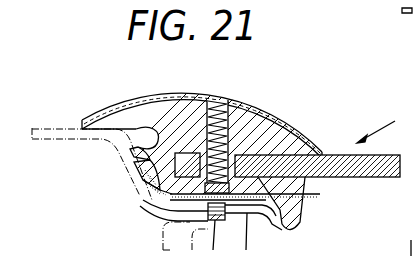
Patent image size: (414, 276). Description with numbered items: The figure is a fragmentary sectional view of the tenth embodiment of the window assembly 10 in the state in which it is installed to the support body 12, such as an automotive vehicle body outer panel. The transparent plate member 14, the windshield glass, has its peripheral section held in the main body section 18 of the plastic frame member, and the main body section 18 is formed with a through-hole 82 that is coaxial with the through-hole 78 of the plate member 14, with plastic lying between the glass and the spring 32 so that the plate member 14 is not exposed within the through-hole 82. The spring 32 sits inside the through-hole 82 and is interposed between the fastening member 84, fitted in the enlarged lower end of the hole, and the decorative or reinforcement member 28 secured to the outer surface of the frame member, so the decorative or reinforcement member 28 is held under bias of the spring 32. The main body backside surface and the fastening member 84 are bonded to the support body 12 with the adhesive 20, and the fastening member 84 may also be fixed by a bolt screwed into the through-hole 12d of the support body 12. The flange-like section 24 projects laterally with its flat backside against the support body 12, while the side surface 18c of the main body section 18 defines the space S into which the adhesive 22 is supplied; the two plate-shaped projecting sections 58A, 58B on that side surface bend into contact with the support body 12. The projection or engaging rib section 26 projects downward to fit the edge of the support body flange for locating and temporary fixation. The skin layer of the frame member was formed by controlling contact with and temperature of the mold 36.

The window assembly 10 is at (385, 127).
The support body 12 is at (185, 248).
The through-hole of the support body 12d is at (232, 222).
The transparent plate member 14 is at (380, 178).
The main body section 18 is at (264, 118).
The side surface of the main body section 18c is at (413, 26).
The adhesive 20 is at (268, 210).
The adhesive 22 is at (142, 192).
The flange-like section 24 is at (98, 121).
The projection or engaging rib section 26 is at (295, 214).
The decorative or reinforcement member 28 is at (300, 124).
The spring 32 is at (231, 112).
The mold 36 is at (325, 270).
The projecting section 58A is at (130, 152).
The projecting section 58B is at (137, 172).
The through-hole of the plate member 78 is at (262, 200).
The through-hole of the main body section 82 is at (211, 100).
The fastening member 84 is at (150, 196).
The space S is at (134, 135).